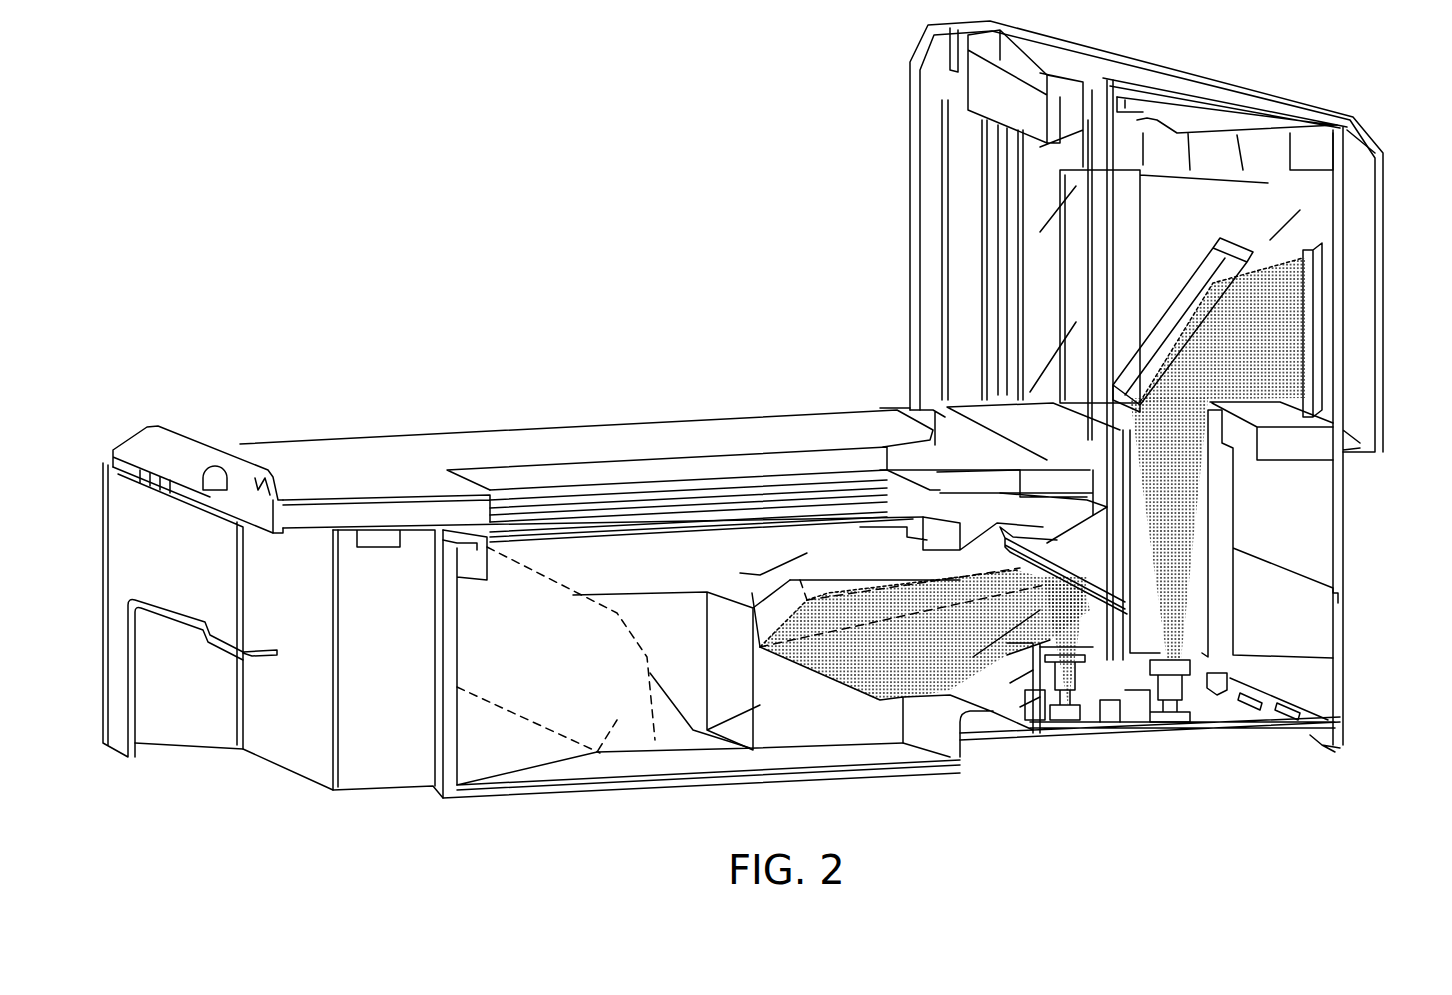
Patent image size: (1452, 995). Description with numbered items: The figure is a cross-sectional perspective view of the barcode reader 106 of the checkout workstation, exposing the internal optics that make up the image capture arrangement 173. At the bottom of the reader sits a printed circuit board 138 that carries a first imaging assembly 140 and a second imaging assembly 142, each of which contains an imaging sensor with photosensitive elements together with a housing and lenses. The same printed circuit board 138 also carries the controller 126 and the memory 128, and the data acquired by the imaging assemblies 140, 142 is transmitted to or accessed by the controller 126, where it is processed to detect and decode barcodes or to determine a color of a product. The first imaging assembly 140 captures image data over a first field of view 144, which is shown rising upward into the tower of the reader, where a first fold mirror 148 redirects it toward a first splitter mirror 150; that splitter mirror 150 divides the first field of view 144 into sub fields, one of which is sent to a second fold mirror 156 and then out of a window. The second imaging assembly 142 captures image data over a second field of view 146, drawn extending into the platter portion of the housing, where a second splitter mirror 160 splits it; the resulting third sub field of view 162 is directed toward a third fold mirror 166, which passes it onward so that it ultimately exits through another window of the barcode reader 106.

The barcode reader 106 is at (878, 48).
The image capture arrangement 173 is at (815, 345).
The second fold mirror 156 is at (1262, 226).
The first fold mirror 148 is at (1200, 286).
The first splitter mirror 150 is at (1310, 325).
The first field of view 144 is at (1185, 510).
The third sub field of view 162 is at (918, 606).
The second splitter mirror 160 is at (1060, 640).
The second field of view 146 is at (1030, 640).
The third fold mirror 166 is at (830, 682).
The second imaging assembly 142 is at (1062, 717).
The first imaging assembly 140 is at (1176, 717).
The controller 126 is at (1240, 700).
The memory 128 is at (1292, 717).
The printed circuit board 138 is at (1318, 740).